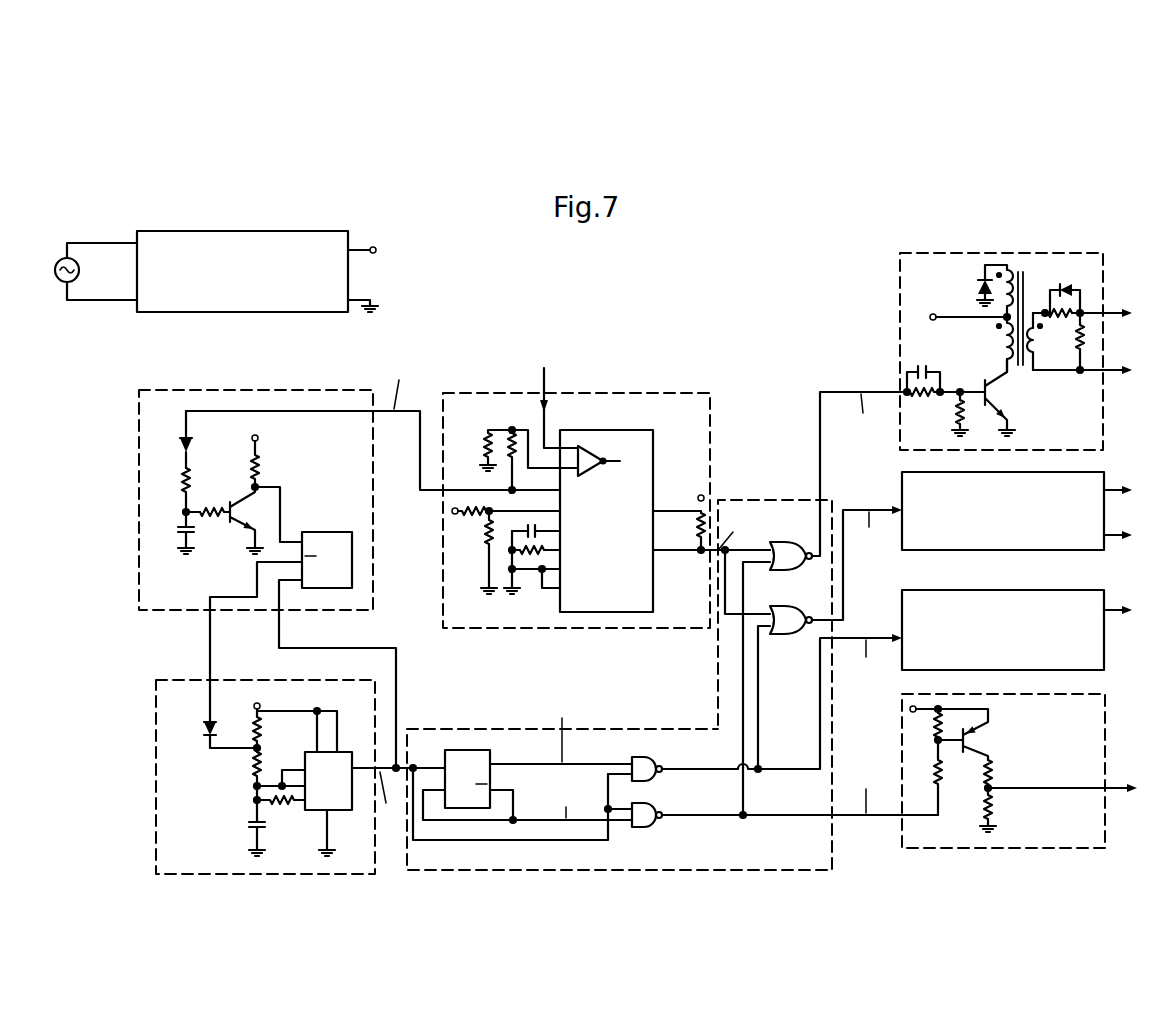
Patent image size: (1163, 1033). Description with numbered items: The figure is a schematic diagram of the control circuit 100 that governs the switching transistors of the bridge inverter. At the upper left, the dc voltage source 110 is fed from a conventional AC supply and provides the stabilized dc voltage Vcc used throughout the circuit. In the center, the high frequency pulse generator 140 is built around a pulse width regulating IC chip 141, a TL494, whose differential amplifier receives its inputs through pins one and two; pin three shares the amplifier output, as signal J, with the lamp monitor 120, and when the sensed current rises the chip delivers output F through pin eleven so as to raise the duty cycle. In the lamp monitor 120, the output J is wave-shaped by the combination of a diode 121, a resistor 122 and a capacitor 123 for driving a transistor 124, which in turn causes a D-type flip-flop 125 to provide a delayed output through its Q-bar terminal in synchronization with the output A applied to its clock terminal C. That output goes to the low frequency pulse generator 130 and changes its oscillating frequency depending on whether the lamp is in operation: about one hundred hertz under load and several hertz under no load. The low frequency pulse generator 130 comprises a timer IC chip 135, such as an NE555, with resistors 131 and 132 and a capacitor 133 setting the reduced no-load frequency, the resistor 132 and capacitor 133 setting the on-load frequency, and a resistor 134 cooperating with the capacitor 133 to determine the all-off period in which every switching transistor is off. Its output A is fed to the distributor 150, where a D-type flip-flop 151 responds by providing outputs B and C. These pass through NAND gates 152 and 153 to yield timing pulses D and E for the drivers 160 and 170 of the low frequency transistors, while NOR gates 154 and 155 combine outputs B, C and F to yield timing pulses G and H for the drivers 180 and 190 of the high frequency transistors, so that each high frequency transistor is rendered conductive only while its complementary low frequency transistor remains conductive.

The control circuit 100 is at (642, 296).
The dc voltage source 110 is at (258, 243).
The lamp monitor 120 is at (307, 559).
The diode 121 is at (178, 443).
The resistor 122 is at (178, 474).
The capacitor 123 is at (178, 528).
The transistor 124 is at (232, 521).
The D-type flip-flop 125 is at (332, 532).
The low frequency pulse generator 130 is at (267, 777).
The resistor 131 is at (262, 731).
The resistor 132 is at (252, 762).
The capacitor 133 is at (250, 824).
The resistor 134 is at (283, 804).
The timer IC chip 135 is at (342, 806).
The high frequency pulse generator 140 is at (606, 482).
The pulse width regulating IC chip 141 is at (639, 430).
The distributor 150 is at (667, 646).
The D-type flip-flop 151 is at (478, 752).
The NAND gate 152 is at (642, 756).
The NAND gate 153 is at (651, 822).
The NOR gate 154 is at (782, 548).
The NOR gate 155 is at (788, 632).
The driver 160 is at (1100, 846).
The driver 170 is at (1096, 597).
The driver 180 is at (972, 255).
The driver 190 is at (1087, 480).